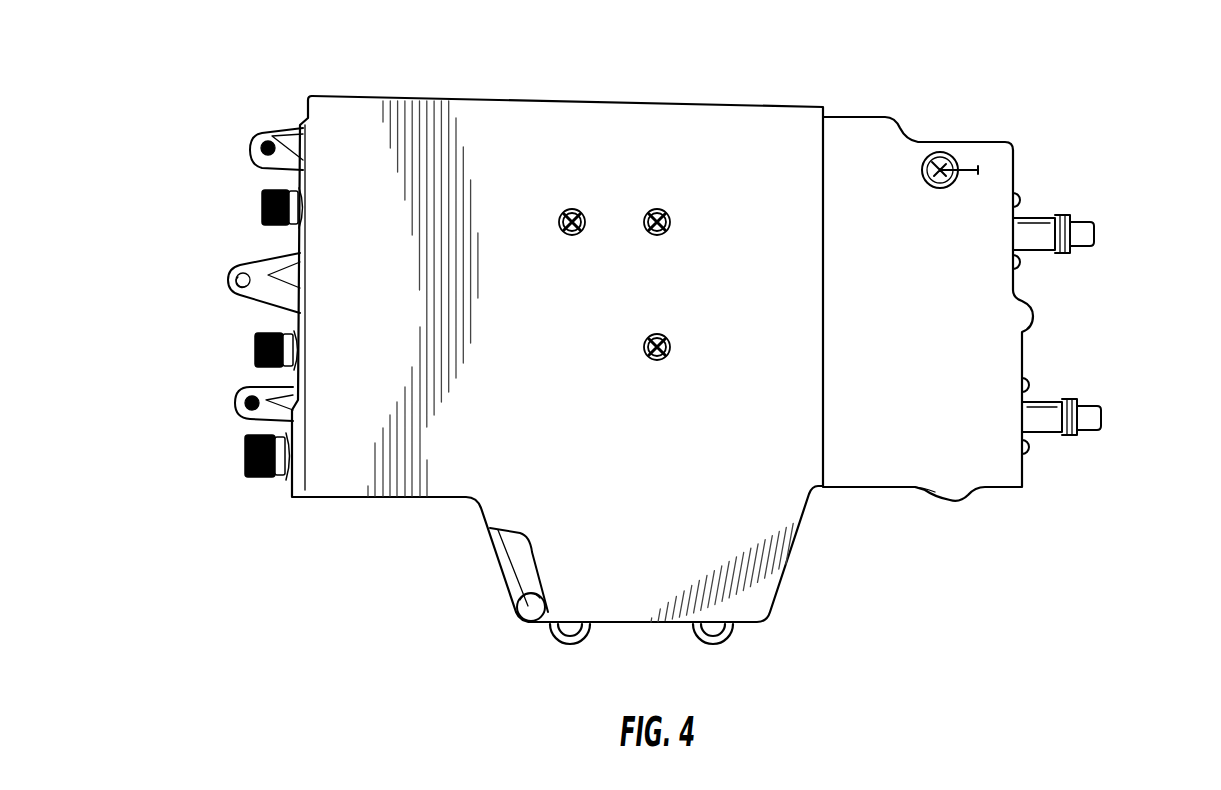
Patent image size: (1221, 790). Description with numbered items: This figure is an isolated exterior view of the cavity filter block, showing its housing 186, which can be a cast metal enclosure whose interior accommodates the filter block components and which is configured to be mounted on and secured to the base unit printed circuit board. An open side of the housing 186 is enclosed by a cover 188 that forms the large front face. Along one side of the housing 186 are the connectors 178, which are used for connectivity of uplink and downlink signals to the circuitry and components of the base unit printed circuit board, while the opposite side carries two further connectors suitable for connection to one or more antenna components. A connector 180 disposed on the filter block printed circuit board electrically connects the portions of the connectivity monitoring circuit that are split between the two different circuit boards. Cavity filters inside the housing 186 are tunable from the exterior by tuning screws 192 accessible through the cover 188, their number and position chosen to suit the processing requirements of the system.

The connectors 178 is at (250, 455).
The connector 180 is at (938, 162).
The housing 186 is at (460, 100).
The cover 188 is at (695, 125).
The tuning screws 192 is at (662, 333).